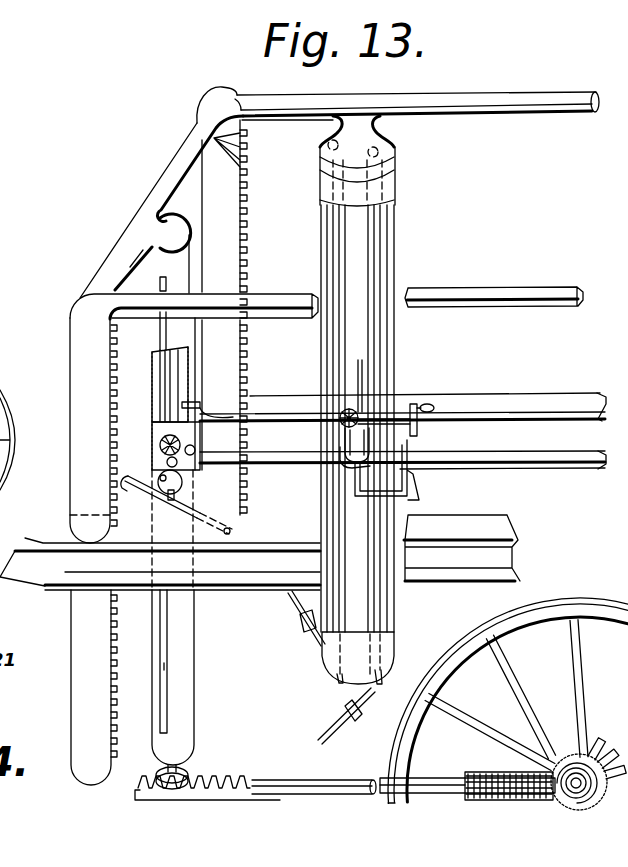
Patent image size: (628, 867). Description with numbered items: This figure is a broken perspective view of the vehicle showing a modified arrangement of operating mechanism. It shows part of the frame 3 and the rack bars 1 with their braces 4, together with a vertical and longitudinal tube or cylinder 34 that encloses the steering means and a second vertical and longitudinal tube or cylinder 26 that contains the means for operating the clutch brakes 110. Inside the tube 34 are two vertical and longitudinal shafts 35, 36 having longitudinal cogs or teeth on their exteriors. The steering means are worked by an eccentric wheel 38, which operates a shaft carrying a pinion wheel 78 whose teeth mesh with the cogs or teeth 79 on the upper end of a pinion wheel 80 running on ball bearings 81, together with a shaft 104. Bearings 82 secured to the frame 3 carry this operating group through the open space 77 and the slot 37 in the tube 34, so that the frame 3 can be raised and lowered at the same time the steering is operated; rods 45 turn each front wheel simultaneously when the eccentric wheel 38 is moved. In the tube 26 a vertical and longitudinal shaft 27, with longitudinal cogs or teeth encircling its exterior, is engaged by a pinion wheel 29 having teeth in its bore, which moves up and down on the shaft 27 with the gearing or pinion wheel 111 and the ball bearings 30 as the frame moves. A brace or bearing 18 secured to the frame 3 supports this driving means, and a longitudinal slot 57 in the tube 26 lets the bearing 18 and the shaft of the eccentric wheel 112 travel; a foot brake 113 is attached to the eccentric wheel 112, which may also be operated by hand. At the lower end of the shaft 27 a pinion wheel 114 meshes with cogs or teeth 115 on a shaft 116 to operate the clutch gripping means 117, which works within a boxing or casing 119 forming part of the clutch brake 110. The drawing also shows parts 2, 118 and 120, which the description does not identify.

The rack bars 1 is at (201, 452).
The rack bar 2 is at (213, 140).
The frame 3 is at (571, 393).
The braces 4 is at (173, 167).
The brace or bearing 18 is at (198, 497).
The tube or cylinder 26 is at (160, 267).
The shaft with longitudinal cogs or teeth 27 is at (158, 365).
The pinion wheel 29 is at (158, 411).
The ball bearings 30 is at (162, 440).
The tube or cylinder 34 is at (393, 184).
The shaft with longitudinal cogs or teeth 35 is at (330, 233).
The shaft with longitudinal cogs or teeth 36 is at (380, 240).
The slot 37 is at (392, 267).
The eccentric wheel 38 is at (418, 432).
The rods 45 is at (303, 627).
The longitudinal slot 57 is at (163, 328).
The open space 77 is at (352, 256).
The pinion wheel 78 is at (370, 408).
The cogs or teeth 79 is at (340, 412).
The pinion wheel 80 is at (348, 442).
The ball bearings 81 is at (348, 466).
The bearings 82 is at (412, 491).
The shaft 104 is at (356, 408).
The clutch brakes 110 is at (477, 768).
The gearings or pinion wheel 111 is at (195, 450).
The eccentric wheel 112 is at (182, 484).
The foot brake 113 is at (138, 503).
The pinion wheel 114 is at (188, 757).
The cogs or teeth 115 is at (236, 775).
The shaft 116 is at (310, 780).
The clutch gripping means 117 is at (552, 745).
The spring 118 is at (507, 767).
The boxing or casing 119 is at (597, 728).
The bracket 120 is at (198, 405).